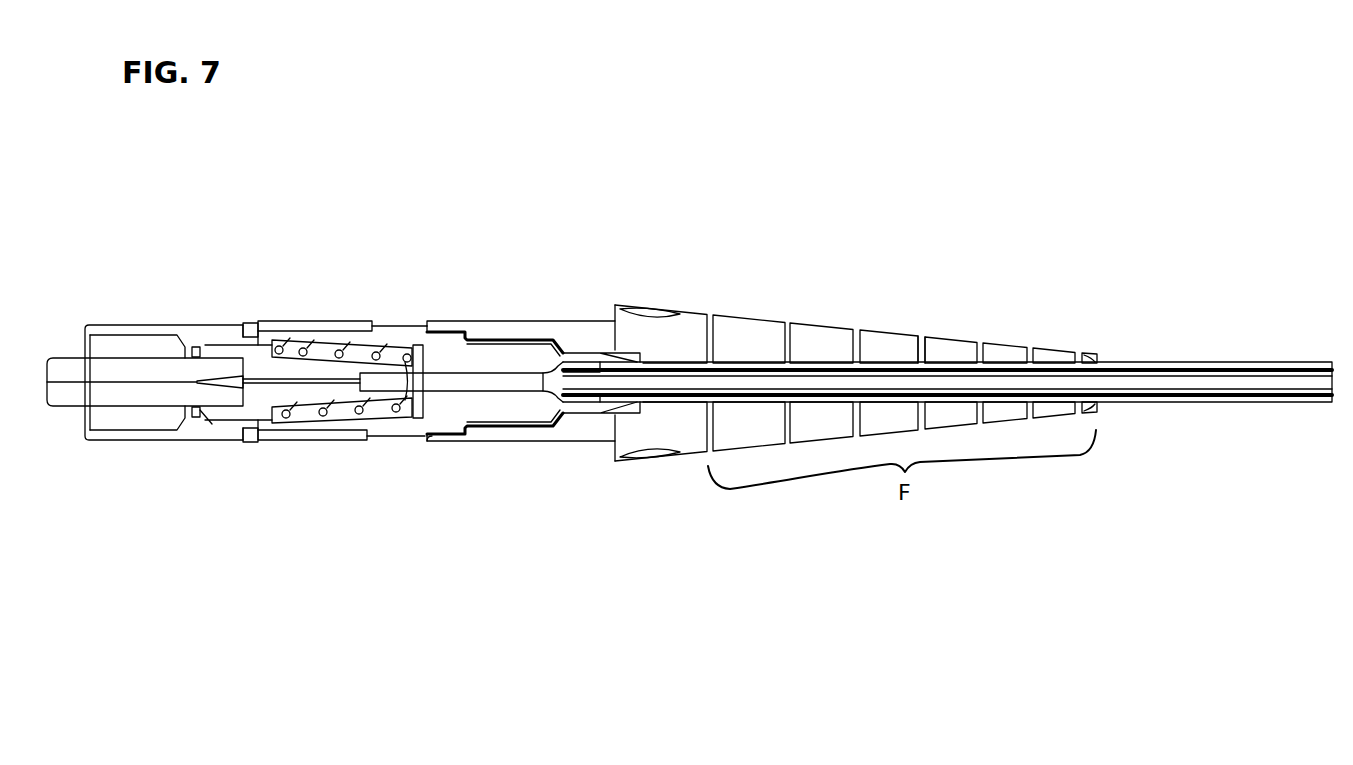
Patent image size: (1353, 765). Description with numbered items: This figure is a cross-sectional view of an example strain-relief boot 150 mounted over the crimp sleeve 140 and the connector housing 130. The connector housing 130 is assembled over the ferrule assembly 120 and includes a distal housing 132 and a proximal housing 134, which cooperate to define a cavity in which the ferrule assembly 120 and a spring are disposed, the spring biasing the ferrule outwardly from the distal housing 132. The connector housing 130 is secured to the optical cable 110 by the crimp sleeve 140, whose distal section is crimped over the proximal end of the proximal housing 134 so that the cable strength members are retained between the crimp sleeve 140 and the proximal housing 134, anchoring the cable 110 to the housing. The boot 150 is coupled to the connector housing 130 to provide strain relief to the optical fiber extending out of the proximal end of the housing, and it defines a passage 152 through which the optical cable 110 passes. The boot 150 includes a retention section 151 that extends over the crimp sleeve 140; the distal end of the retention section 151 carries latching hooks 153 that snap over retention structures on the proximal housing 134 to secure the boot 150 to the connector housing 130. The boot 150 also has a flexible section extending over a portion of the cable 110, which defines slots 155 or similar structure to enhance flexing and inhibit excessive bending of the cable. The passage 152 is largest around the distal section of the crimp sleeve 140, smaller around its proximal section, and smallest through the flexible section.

The optical cable 110 is at (1258, 360).
The ferrule assembly 120 is at (197, 420).
The connector housing 130 is at (315, 318).
The distal housing 132 is at (138, 325).
The proximal housing 134 is at (398, 327).
The crimp sleeve 140 is at (516, 425).
The strain-relief boot 150 is at (760, 317).
The retention section 151 is at (514, 322).
The passage 152 is at (520, 342).
The latching hooks 153 is at (432, 441).
The slot 155 is at (920, 345).